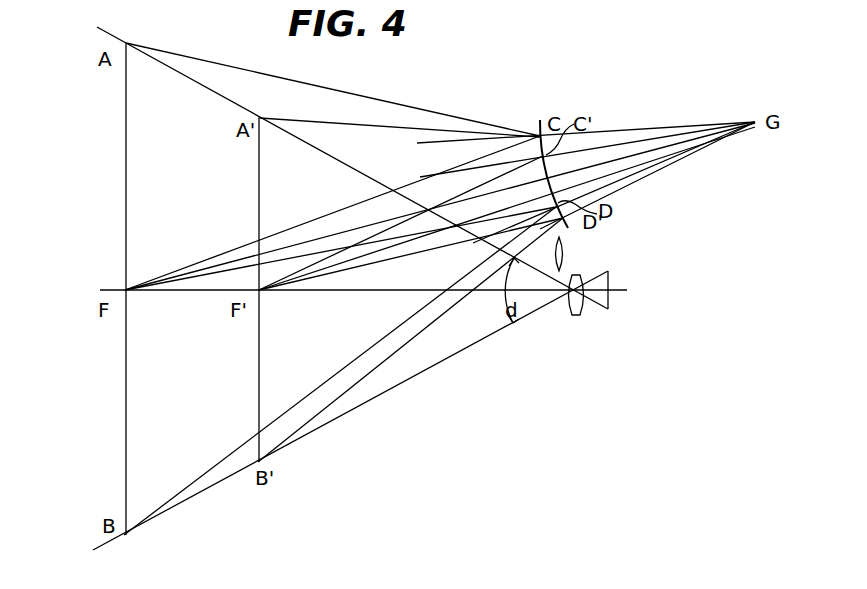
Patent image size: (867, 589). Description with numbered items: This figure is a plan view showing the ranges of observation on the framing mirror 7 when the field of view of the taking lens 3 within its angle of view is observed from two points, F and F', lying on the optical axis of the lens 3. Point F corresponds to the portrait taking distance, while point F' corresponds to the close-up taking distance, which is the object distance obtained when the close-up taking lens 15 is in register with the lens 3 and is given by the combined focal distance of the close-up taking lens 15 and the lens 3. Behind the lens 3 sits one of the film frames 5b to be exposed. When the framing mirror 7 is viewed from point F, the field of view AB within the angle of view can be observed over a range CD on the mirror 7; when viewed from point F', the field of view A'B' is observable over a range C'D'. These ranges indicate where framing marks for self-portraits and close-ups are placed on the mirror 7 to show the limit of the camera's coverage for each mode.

The framing mirror 7 is at (540, 122).
The close-up taking lens 15 is at (564, 250).
The taking lens 3 is at (573, 318).
The film frame 5b is at (609, 300).